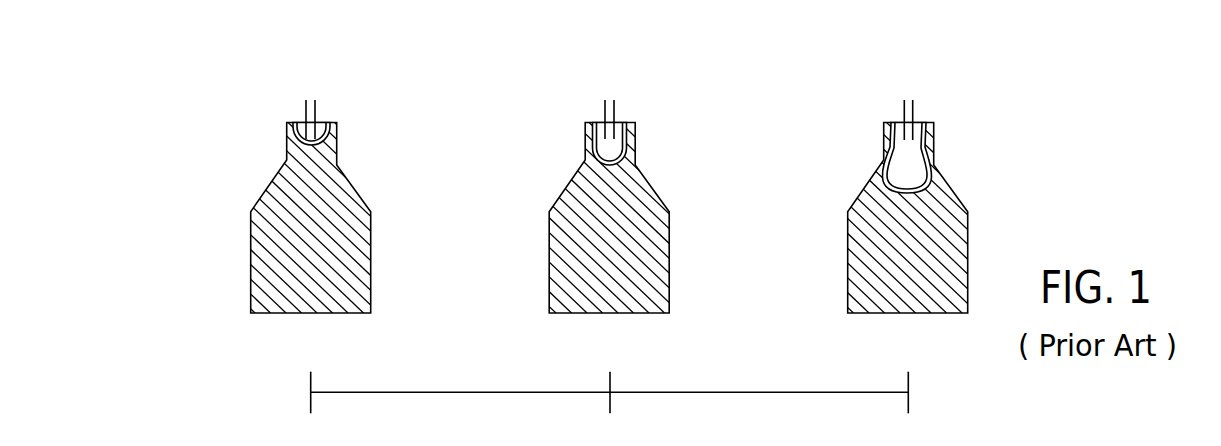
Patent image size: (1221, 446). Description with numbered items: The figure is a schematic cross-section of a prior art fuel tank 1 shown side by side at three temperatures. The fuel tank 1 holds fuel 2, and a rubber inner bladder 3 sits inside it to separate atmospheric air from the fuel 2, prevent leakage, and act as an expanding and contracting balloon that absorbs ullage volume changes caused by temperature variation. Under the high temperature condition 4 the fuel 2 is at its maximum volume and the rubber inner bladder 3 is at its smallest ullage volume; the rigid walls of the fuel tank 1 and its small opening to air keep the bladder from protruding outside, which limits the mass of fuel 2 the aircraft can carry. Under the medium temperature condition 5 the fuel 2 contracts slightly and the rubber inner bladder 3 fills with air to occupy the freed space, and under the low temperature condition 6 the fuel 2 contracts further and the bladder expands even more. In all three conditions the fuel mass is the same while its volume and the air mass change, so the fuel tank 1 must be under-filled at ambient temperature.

The fuel tank 1 is at (265, 190).
The fuel 2 is at (277, 223).
The rubber inner bladder 3 is at (289, 128).
The high temperature condition 4 is at (276, 182).
The medium temperature condition 5 is at (575, 182).
The low temperature condition 6 is at (873, 182).